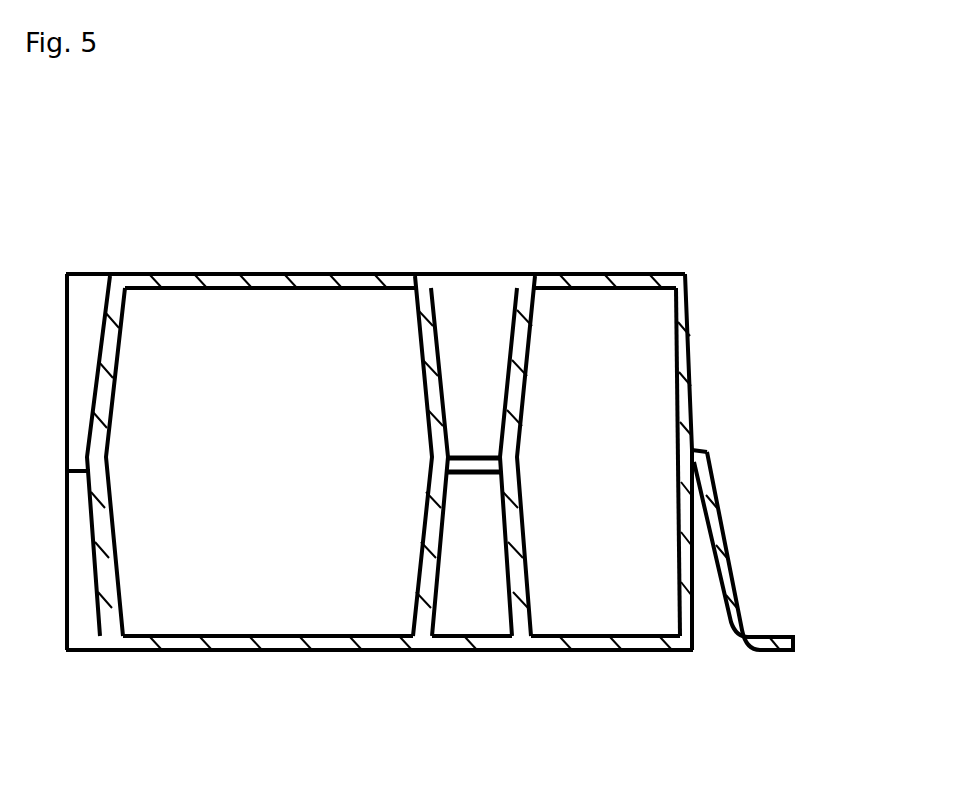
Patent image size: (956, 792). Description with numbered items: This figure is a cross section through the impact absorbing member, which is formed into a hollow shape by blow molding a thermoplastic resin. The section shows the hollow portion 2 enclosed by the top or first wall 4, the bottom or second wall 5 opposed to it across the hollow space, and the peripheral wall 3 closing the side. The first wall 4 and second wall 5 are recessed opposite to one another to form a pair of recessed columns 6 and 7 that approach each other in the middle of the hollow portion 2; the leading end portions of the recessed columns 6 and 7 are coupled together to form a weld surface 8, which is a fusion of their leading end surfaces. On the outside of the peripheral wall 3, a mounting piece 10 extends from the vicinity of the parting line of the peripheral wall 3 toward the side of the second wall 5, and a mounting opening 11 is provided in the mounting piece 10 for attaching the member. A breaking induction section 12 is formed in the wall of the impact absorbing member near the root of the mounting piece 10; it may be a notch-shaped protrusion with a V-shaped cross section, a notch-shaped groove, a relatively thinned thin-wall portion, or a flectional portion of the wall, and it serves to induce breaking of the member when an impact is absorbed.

The hollow portion 2 is at (292, 362).
The peripheral wall 3 is at (693, 352).
The first wall 4 is at (232, 274).
The second wall 5 is at (278, 655).
The recessed column 6 is at (480, 320).
The recessed column 7 is at (465, 608).
The weld surface 8 is at (472, 476).
The mounting piece 10 is at (732, 558).
The mounting opening 11 is at (764, 634).
The breaking induction section 12 is at (718, 465).